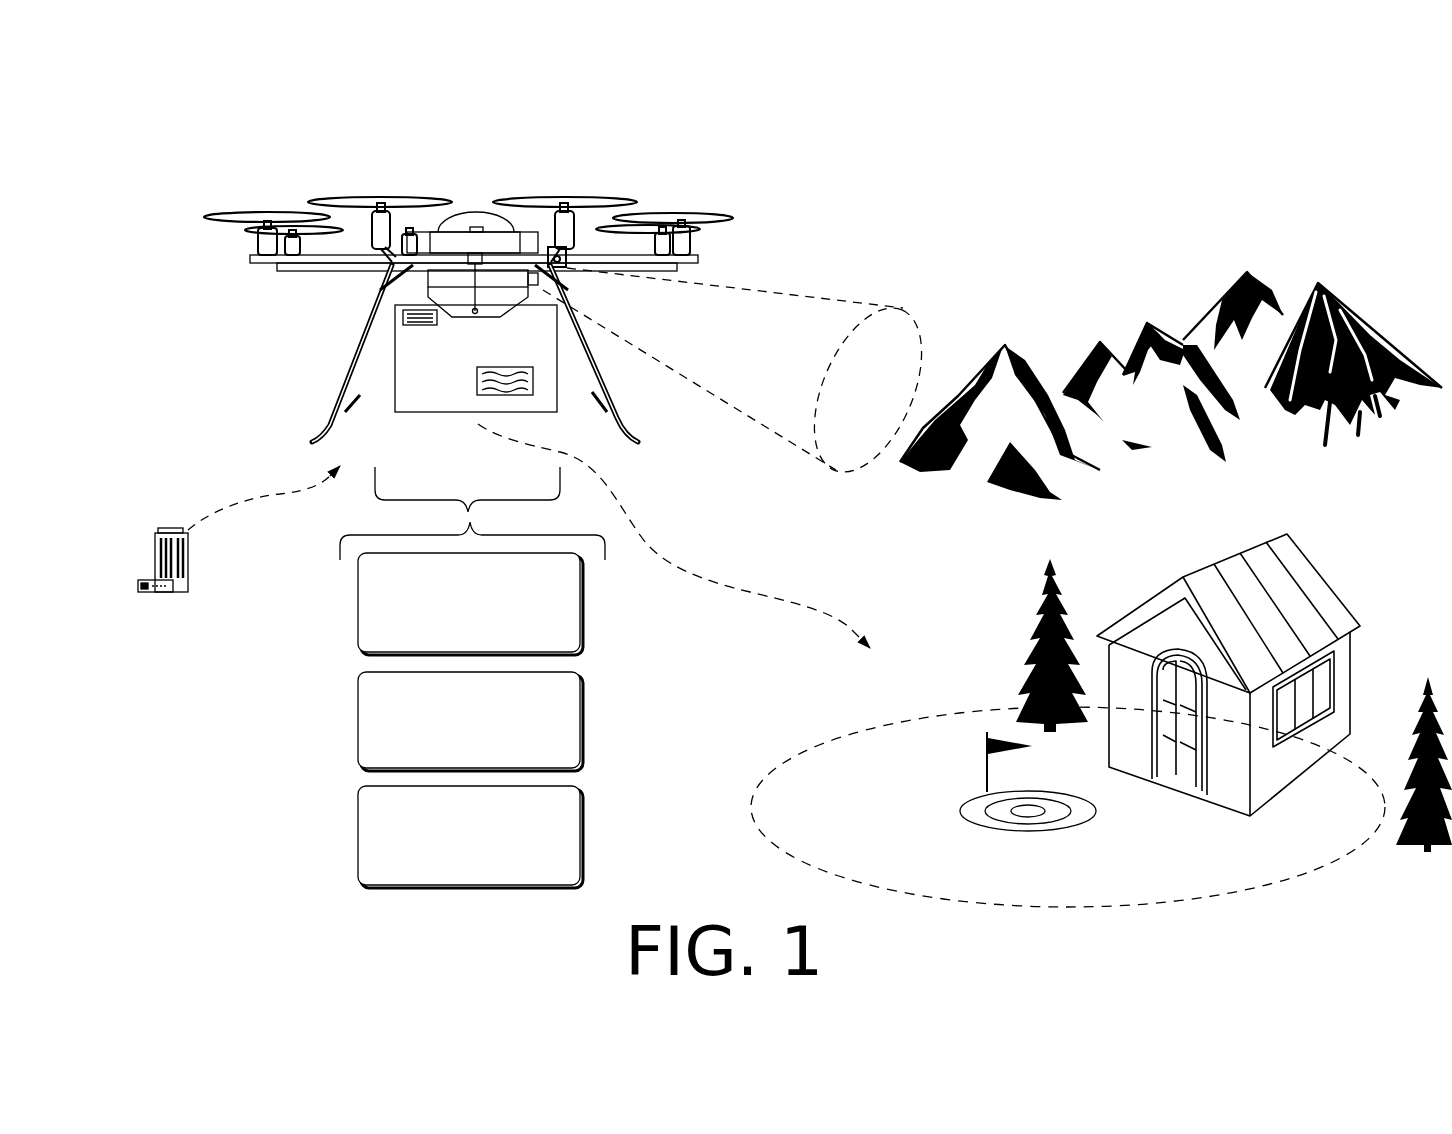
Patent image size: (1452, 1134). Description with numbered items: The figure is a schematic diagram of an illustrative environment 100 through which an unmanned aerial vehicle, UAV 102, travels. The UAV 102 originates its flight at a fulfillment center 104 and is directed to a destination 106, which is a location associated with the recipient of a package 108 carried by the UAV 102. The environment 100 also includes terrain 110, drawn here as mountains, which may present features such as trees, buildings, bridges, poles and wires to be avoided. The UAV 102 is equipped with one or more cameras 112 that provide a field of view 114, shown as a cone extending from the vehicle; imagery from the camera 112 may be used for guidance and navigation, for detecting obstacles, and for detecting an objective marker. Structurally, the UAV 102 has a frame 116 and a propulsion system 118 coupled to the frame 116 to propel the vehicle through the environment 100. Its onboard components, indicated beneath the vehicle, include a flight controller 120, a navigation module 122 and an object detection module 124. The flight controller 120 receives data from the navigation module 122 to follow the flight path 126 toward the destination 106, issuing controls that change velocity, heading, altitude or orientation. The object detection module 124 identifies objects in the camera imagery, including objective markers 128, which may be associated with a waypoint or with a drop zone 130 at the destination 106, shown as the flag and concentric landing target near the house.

The environment 100 is at (1253, 132).
The unmanned aerial vehicle 102 is at (310, 122).
The fulfillment center 104 is at (218, 560).
The destination 106 is at (895, 760).
The package 108 is at (473, 412).
The terrain 110 is at (1116, 283).
The camera 112 is at (535, 292).
The field of view 114 is at (899, 298).
The frame 116 is at (318, 287).
The propulsion system 118 is at (597, 176).
The flight controller 120 is at (470, 604).
The navigation module 122 is at (470, 721).
The object detection module 124 is at (470, 837).
The flight path 126 is at (755, 620).
The objective marker 128 is at (987, 730).
The drop zone 130 is at (1068, 836).